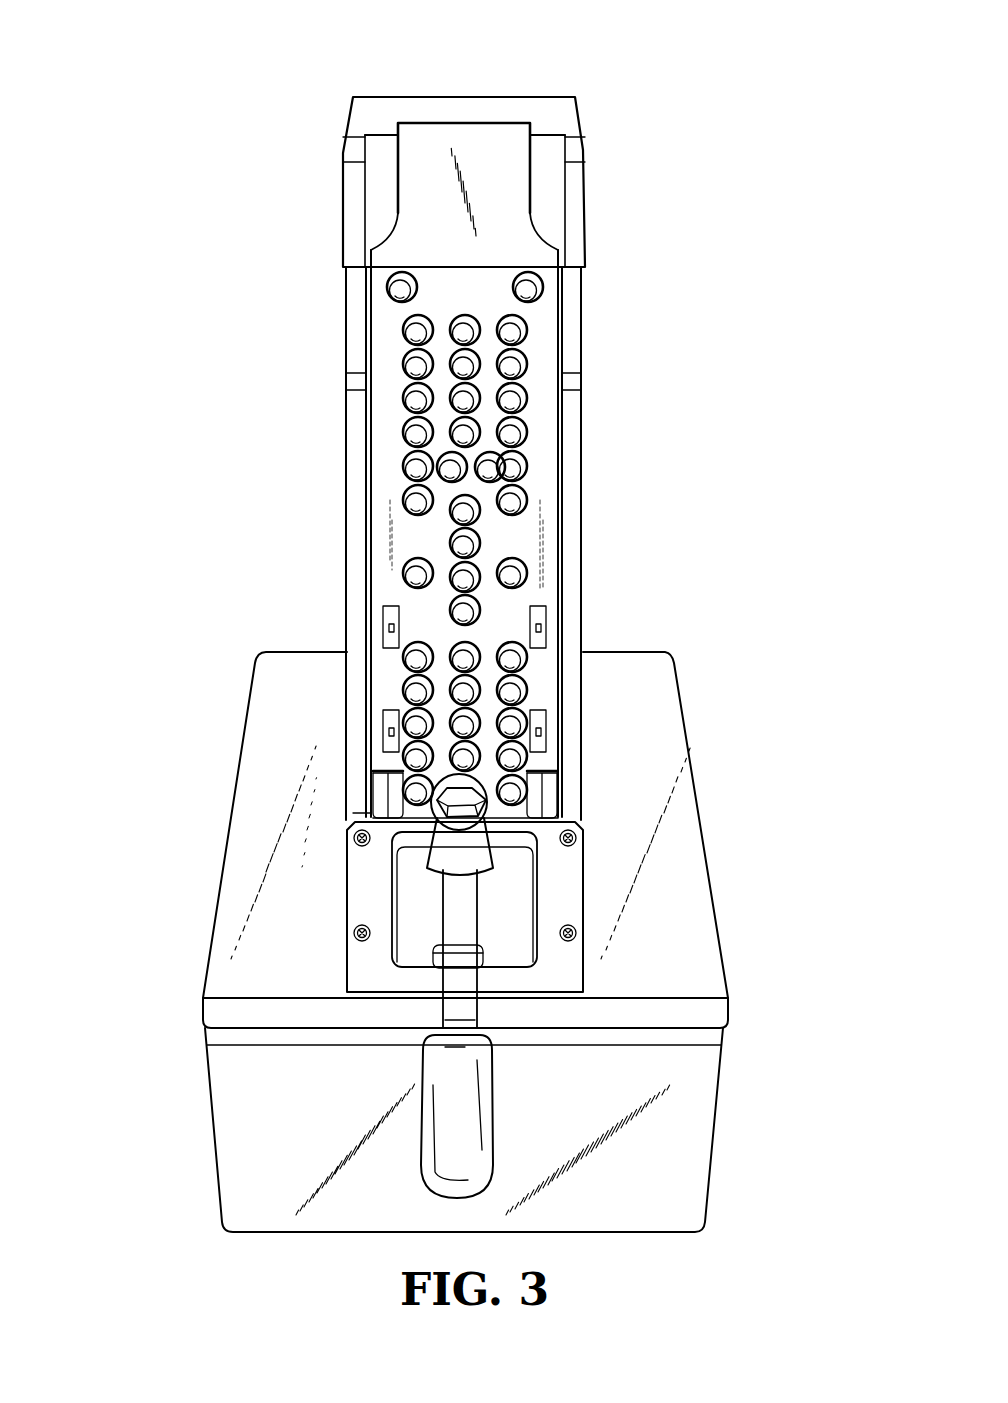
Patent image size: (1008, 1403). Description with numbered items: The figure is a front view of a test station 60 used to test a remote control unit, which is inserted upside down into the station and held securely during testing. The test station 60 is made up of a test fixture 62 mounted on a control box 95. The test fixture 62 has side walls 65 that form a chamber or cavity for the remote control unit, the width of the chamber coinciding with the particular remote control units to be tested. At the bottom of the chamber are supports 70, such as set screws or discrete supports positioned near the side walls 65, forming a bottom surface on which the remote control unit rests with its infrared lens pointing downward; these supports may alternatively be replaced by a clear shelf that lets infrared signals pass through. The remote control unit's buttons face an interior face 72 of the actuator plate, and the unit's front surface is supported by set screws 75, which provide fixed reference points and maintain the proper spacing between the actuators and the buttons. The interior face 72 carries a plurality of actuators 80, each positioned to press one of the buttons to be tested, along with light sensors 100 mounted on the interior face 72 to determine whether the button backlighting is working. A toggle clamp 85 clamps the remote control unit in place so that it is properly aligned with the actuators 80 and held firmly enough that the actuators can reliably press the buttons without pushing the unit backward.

The test station 60 is at (763, 333).
The test fixture 62 is at (506, 110).
The side walls 65 is at (350, 247).
The support 70 is at (380, 784).
The interior face 72 is at (437, 220).
The set screws 75 is at (520, 297).
The actuators 80 is at (523, 498).
The toggle clamp 85 is at (467, 1153).
The control box 95 is at (293, 1150).
The light sensors 100 is at (383, 731).